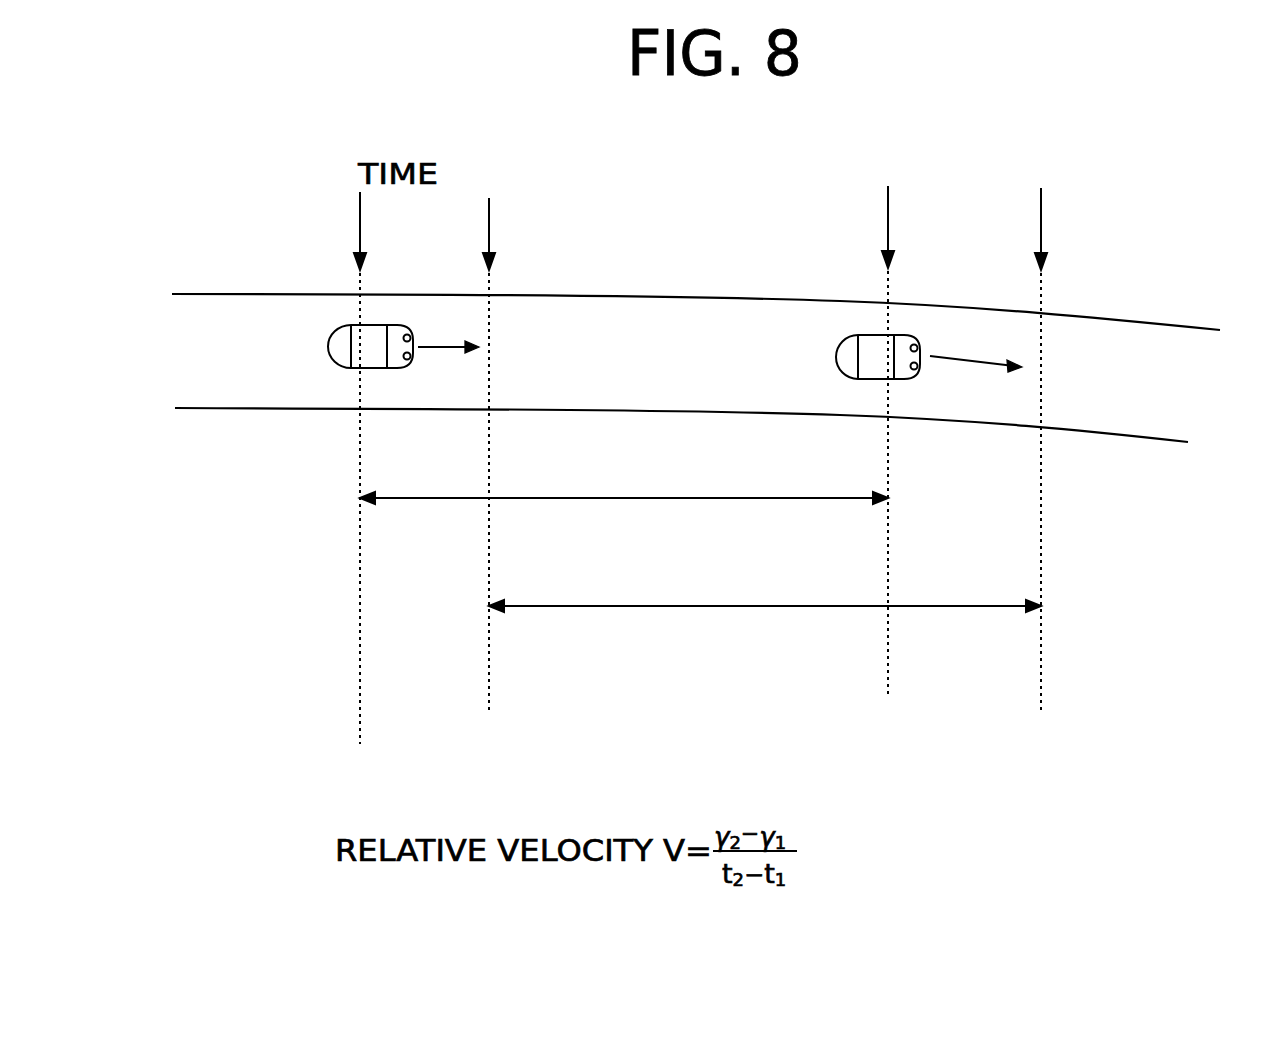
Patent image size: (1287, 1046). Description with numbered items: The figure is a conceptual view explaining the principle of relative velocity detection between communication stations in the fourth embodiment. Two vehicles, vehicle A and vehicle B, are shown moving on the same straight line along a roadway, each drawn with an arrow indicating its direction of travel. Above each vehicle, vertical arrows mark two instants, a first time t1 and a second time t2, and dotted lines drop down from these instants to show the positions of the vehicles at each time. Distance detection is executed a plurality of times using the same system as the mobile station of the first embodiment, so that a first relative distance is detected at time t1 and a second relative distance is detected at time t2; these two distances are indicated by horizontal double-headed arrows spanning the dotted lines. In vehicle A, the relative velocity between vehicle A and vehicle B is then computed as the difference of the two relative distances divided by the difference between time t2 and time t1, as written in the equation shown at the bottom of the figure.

The vehicle A is at (392, 337).
The vehicle B is at (924, 341).
The time t1 is at (639, 465).
The time t2 is at (780, 450).